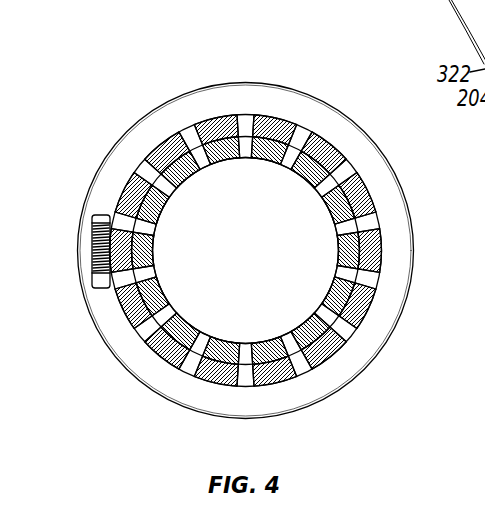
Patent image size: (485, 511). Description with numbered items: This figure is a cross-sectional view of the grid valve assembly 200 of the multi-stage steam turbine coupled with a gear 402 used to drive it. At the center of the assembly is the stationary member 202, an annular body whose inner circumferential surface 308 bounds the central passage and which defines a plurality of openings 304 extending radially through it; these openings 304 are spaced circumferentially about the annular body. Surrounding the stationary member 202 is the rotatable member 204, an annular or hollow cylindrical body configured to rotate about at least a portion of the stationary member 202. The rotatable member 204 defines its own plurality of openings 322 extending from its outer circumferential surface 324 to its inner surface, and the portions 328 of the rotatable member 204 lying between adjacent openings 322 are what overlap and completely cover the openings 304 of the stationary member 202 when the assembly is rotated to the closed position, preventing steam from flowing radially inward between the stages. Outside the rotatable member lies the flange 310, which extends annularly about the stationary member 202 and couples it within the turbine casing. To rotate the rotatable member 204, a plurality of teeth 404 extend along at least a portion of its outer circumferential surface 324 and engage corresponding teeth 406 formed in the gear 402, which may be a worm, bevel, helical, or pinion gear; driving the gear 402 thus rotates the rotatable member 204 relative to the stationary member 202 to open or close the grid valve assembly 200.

The grid valve assembly 200 is at (148, 62).
The stationary member 202 is at (162, 283).
The rotatable member 204 is at (159, 364).
The plurality of openings 304 is at (243, 160).
The inner circumferential surface 308 is at (303, 180).
The flange 310 is at (208, 82).
The plurality of openings 322 is at (243, 109).
The outer circumferential surface 324 is at (277, 120).
The portions 328 is at (157, 140).
The gear 402 is at (88, 216).
The plurality of teeth 404 is at (112, 255).
The teeth 406 is at (92, 270).